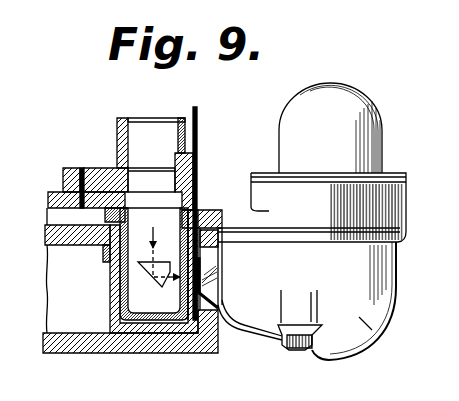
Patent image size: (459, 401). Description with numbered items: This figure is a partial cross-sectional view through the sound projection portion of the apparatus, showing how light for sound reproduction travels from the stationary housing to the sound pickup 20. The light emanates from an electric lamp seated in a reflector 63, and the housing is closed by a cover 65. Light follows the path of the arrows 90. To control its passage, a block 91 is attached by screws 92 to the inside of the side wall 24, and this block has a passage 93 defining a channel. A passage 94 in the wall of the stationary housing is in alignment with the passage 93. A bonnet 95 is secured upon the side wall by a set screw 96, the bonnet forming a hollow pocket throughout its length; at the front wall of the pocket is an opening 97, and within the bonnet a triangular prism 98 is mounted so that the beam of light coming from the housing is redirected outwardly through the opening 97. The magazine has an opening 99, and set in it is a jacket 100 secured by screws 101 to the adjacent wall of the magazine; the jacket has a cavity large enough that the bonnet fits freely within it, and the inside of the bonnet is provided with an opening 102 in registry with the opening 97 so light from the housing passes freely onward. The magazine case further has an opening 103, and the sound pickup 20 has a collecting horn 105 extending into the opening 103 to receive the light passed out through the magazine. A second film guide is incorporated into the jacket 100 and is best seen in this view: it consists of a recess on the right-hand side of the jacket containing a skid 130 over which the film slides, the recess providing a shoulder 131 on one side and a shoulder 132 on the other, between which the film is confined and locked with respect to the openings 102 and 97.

The sound pickup 20 is at (412, 226).
The reflector 63 is at (372, 122).
The cover 65 is at (397, 284).
The passage 93 is at (133, 127).
The block 91 is at (100, 167).
The screws 92 is at (83, 168).
The side wall 24 is at (50, 197).
The passage 94 is at (194, 190).
The bonnet 95 is at (200, 213).
The set screw 96 is at (105, 217).
The opening 99 is at (77, 237).
The screws 101 is at (103, 258).
The arrows 90 is at (153, 245).
The jacket 100 is at (110, 305).
The opening 97 is at (182, 287).
The triangular prism 98 is at (160, 289).
The shoulder 132 is at (192, 355).
The opening 103 is at (232, 320).
The shoulder 131 is at (218, 260).
The opening 102 is at (202, 272).
The skid 130 is at (212, 296).
The collecting horn 105 is at (212, 304).